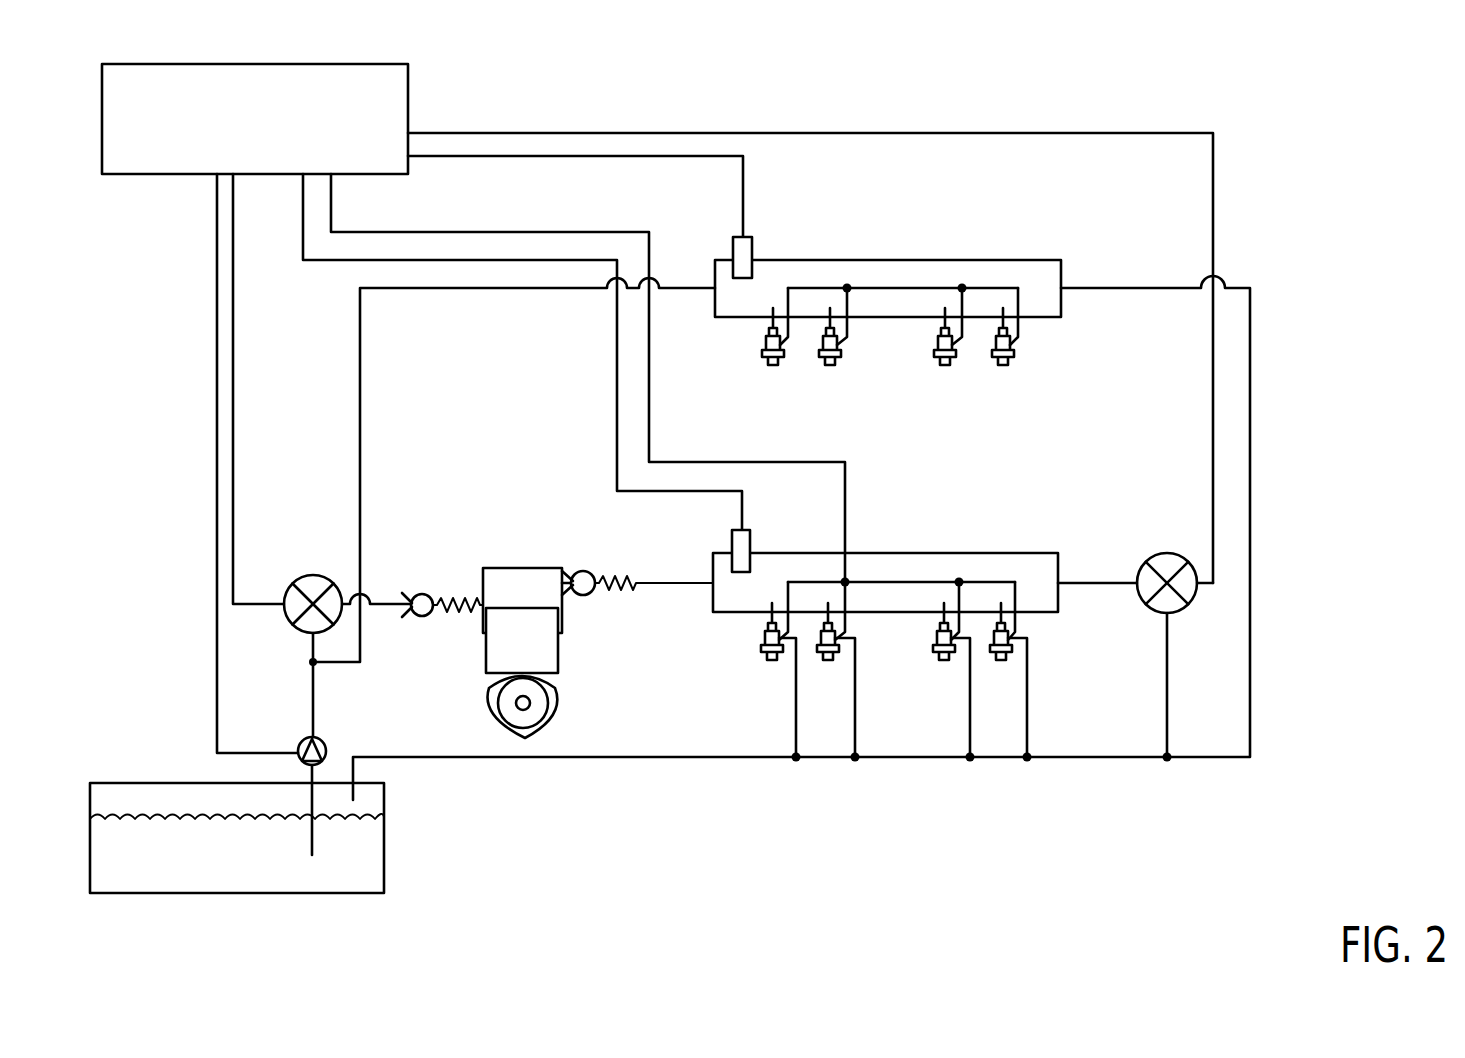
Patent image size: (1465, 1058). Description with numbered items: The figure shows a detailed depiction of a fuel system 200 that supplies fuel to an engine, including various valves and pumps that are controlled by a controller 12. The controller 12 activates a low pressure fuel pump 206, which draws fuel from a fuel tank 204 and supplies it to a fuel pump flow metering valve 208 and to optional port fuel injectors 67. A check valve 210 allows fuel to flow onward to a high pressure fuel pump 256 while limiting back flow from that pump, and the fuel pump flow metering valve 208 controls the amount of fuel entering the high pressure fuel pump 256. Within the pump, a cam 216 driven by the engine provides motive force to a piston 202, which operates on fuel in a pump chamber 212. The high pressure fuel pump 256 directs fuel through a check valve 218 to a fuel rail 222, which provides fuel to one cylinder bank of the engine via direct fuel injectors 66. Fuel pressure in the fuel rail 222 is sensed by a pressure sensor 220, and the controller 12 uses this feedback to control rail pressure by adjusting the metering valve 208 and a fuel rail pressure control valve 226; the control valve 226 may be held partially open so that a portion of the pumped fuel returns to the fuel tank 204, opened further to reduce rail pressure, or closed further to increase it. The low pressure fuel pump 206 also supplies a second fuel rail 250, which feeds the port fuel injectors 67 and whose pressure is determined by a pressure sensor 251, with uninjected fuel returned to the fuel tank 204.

The controller 12 is at (240, 131).
The fuel system 200 is at (1312, 68).
The piston 202 is at (504, 648).
The fuel tank 204 is at (384, 880).
The low pressure fuel pump 206 is at (298, 757).
The fuel pump flow metering valve 208 is at (297, 632).
The check valve 210 is at (428, 593).
The pump chamber 212 is at (504, 598).
The cam 216 is at (490, 703).
The check valve 218 is at (590, 572).
The pressure sensor 220 is at (750, 531).
The fuel rail 222 is at (905, 553).
The fuel rail pressure control valve 226 is at (1167, 553).
The fuel rail 250 is at (908, 259).
The pressure sensor 251 is at (753, 243).
The high pressure fuel pump 256 is at (505, 594).
The direct fuel injectors 66 is at (761, 654).
The port fuel injectors 67 is at (762, 358).